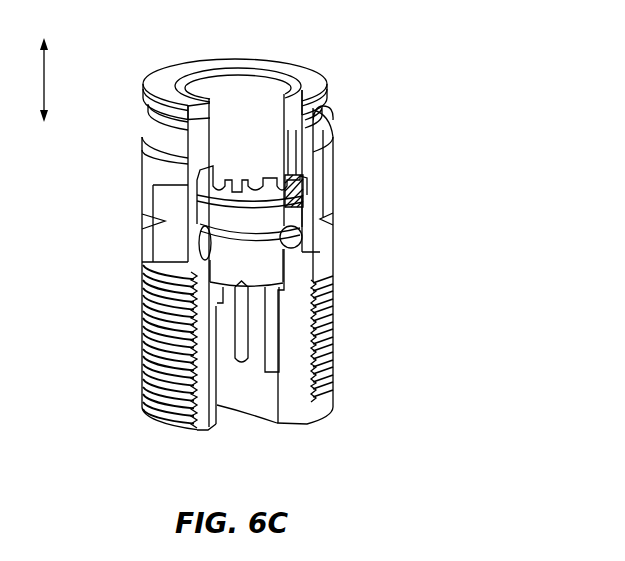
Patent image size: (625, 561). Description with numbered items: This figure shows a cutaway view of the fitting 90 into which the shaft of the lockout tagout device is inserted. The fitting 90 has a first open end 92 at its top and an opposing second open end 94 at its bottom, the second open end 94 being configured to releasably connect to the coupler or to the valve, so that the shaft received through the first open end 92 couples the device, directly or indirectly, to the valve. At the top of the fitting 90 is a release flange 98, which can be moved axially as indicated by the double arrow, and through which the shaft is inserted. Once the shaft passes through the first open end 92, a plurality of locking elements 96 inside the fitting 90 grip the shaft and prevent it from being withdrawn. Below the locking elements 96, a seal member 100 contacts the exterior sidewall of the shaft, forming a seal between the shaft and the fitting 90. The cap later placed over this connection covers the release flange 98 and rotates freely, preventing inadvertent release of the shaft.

The fitting 90 is at (387, 67).
The first open end 92 is at (231, 95).
The second open end 94 is at (250, 425).
The locking elements 96 is at (263, 178).
The release flange 98 is at (153, 76).
The seal member 100 is at (233, 213).